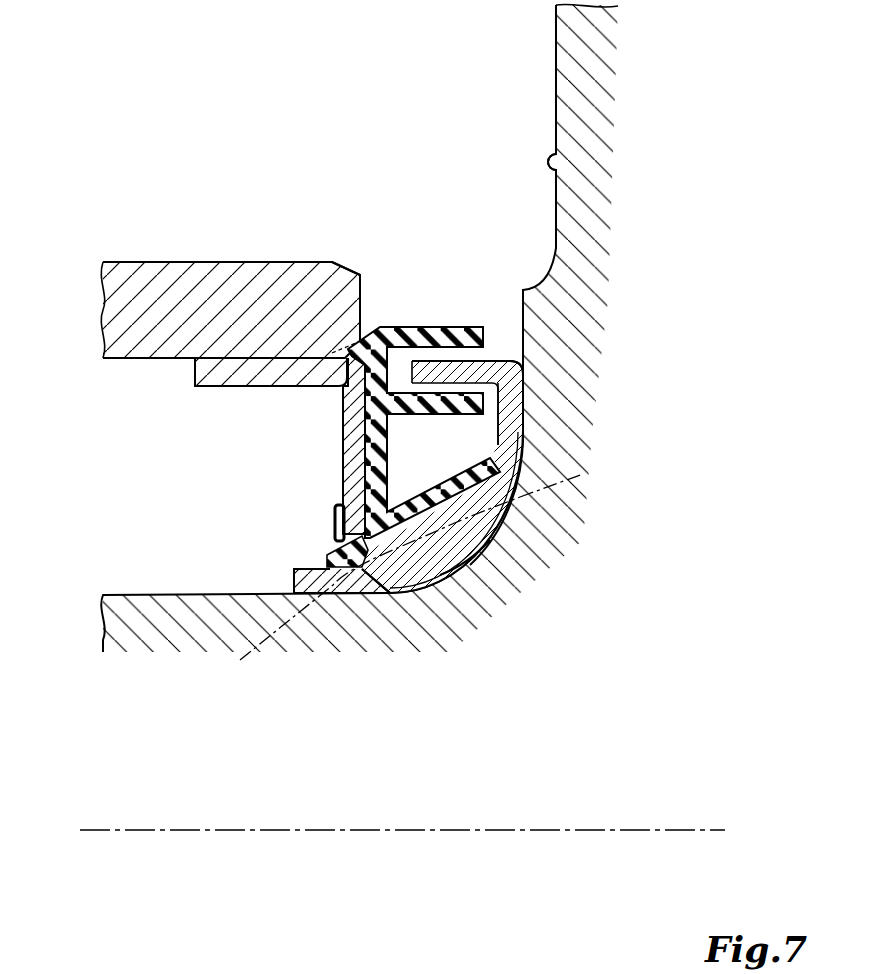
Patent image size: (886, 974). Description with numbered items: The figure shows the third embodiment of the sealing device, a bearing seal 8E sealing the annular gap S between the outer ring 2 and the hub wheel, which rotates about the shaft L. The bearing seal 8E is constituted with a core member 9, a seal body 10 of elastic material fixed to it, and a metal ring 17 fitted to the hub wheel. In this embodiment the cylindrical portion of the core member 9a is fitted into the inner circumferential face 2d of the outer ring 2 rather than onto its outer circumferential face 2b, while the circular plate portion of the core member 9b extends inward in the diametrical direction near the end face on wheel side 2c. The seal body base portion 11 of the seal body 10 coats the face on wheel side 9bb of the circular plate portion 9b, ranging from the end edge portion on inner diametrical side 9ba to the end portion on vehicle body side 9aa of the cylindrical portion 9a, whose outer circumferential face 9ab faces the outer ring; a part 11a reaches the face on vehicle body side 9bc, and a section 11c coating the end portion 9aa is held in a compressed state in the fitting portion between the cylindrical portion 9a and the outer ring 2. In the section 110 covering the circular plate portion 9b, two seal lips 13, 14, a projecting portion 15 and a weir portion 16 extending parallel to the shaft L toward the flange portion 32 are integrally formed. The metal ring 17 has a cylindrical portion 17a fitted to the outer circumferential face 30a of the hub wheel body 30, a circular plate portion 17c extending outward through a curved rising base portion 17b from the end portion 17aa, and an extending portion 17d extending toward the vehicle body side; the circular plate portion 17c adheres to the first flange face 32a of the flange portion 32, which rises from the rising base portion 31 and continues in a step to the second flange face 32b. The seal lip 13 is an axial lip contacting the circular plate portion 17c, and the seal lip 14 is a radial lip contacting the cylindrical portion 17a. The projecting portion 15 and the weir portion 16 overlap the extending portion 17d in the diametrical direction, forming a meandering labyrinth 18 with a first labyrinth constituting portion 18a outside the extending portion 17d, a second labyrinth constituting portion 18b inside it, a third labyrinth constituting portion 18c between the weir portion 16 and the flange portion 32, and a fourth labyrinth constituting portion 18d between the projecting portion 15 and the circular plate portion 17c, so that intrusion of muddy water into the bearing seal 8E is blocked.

The outer ring 2 is at (128, 345).
The outer circumferential face 2b is at (232, 262).
The end face on wheel side 2c is at (362, 297).
The inner circumferential face 2d is at (167, 358).
The bearing seal 8E is at (313, 480).
The core member 9 is at (212, 390).
The cylindrical portion of the core member 9a is at (277, 388).
The end portion on vehicle body side 9aa is at (348, 377).
The outer circumferential face 9ab is at (227, 357).
The circular plate portion of the core member 9b is at (343, 442).
The end edge portion on inner diametrical side 9ba is at (343, 547).
The face on wheel side 9bb is at (387, 483).
The face on vehicle body side 9bc is at (343, 468).
The seal body 10 is at (460, 445).
The seal body base portion 11 is at (392, 437).
The part of the seal base portion 11a is at (335, 512).
The section coating the end portion on vehicle body side 11c is at (340, 372).
The section covering the circular plate portion 110 is at (387, 467).
The seal lip 13 is at (583, 474).
The seal lip 14 is at (330, 590).
The projecting portion 15 is at (478, 402).
The weir portion 16 is at (437, 333).
The metal ring 17 is at (500, 530).
The cylindrical portion 17a is at (343, 573).
The end portion on the flange portion side 17aa is at (386, 585).
The rising base portion 17b is at (463, 540).
The circular plate portion 17c is at (500, 440).
The extending portion 17d is at (450, 372).
The labyrinth 18 is at (355, 348).
The first labyrinth constituting portion 18a is at (473, 355).
The second labyrinth constituting portion 18b is at (372, 365).
The third labyrinth constituting portion 18c is at (505, 330).
The fourth labyrinth constituting portion 18d is at (492, 420).
The hub wheel body 30 is at (148, 600).
The outer circumferential face 30a is at (296, 577).
The rising base portion 31 is at (515, 568).
The flange portion 32 is at (563, 55).
The first flange face 32a is at (526, 378).
The second flange face 32b is at (553, 157).
The annular gap S is at (127, 478).
The shaft L is at (685, 830).